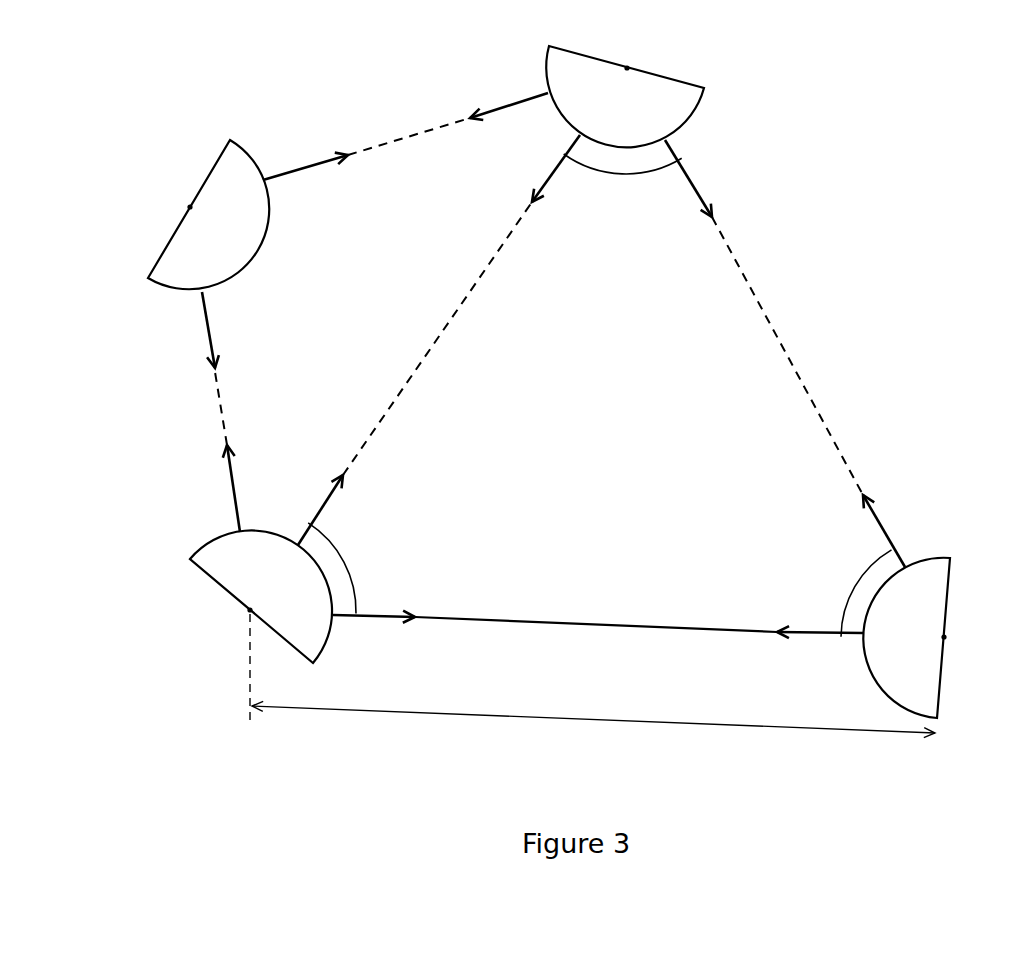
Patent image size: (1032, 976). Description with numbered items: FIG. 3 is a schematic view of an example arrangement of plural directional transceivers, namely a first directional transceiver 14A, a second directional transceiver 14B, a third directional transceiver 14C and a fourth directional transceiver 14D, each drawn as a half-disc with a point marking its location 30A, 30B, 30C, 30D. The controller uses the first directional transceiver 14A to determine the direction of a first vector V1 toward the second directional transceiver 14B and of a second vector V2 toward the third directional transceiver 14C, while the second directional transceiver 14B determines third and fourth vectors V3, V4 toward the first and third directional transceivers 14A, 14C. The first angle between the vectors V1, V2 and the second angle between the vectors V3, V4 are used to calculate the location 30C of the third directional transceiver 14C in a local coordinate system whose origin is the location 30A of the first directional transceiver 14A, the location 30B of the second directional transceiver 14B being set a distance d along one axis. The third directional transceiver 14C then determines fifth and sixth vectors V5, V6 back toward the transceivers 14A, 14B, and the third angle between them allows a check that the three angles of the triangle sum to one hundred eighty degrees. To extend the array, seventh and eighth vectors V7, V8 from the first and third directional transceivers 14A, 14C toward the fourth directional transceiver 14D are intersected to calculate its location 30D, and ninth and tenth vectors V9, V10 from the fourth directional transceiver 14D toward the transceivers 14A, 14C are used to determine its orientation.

The first directional transceiver 14A is at (261, 596).
The second directional transceiver 14B is at (906, 638).
The third directional transceiver 14C is at (625, 96).
The fourth directional transceiver 14D is at (208, 214).
The location of the first directional transceiver 30A is at (250, 610).
The location of the second directional transceiver 30B is at (944, 637).
The location of the third directional transceiver 30C is at (627, 68).
The location of the fourth directional transceiver 30D is at (190, 207).
The first vector V1 is at (338, 618).
The second vector V2 is at (343, 475).
The third vector V3 is at (780, 633).
The fourth vector V4 is at (863, 495).
The fifth vector V5 is at (532, 202).
The sixth vector V6 is at (712, 217).
The seventh vector V7 is at (227, 445).
The eighth vector V8 is at (470, 118).
The ninth vector V9 is at (215, 372).
The tenth vector V10 is at (348, 155).
The distance between the locations of the first and second directional transceivers d is at (592, 682).